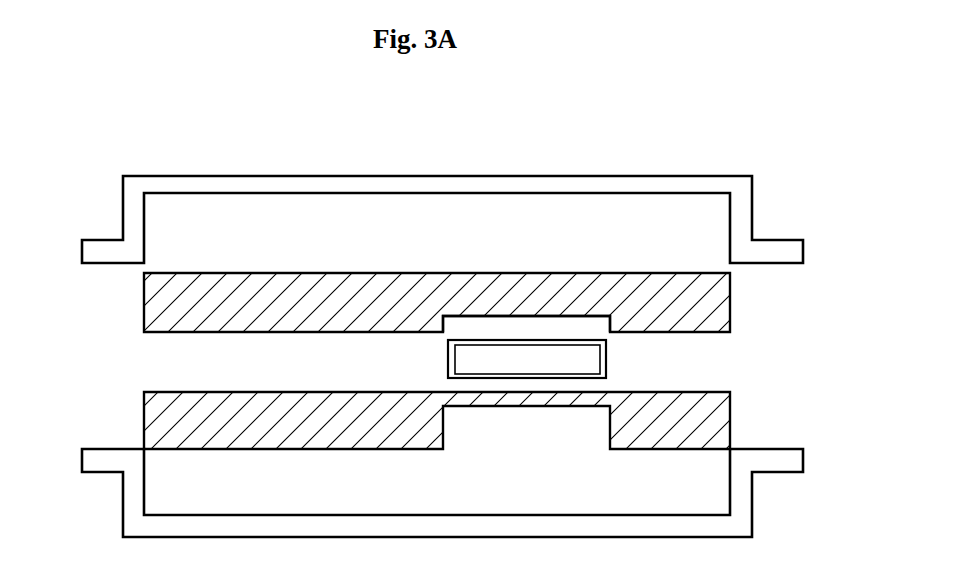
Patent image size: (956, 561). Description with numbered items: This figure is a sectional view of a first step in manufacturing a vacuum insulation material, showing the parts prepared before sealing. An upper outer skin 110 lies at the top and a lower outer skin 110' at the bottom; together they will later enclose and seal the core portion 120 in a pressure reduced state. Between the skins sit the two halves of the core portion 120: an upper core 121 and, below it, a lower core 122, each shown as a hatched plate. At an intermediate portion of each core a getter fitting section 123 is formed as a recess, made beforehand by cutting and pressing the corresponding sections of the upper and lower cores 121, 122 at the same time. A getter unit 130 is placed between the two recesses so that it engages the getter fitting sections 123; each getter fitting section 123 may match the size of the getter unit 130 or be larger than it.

The upper outer skin 110 is at (442, 187).
The lower outer skin 110' is at (461, 493).
The core portion 120 is at (470, 360).
The upper core 121 is at (160, 304).
The lower core 122 is at (404, 420).
The getter fitting section 123 is at (529, 315).
The getter unit 130 is at (655, 361).